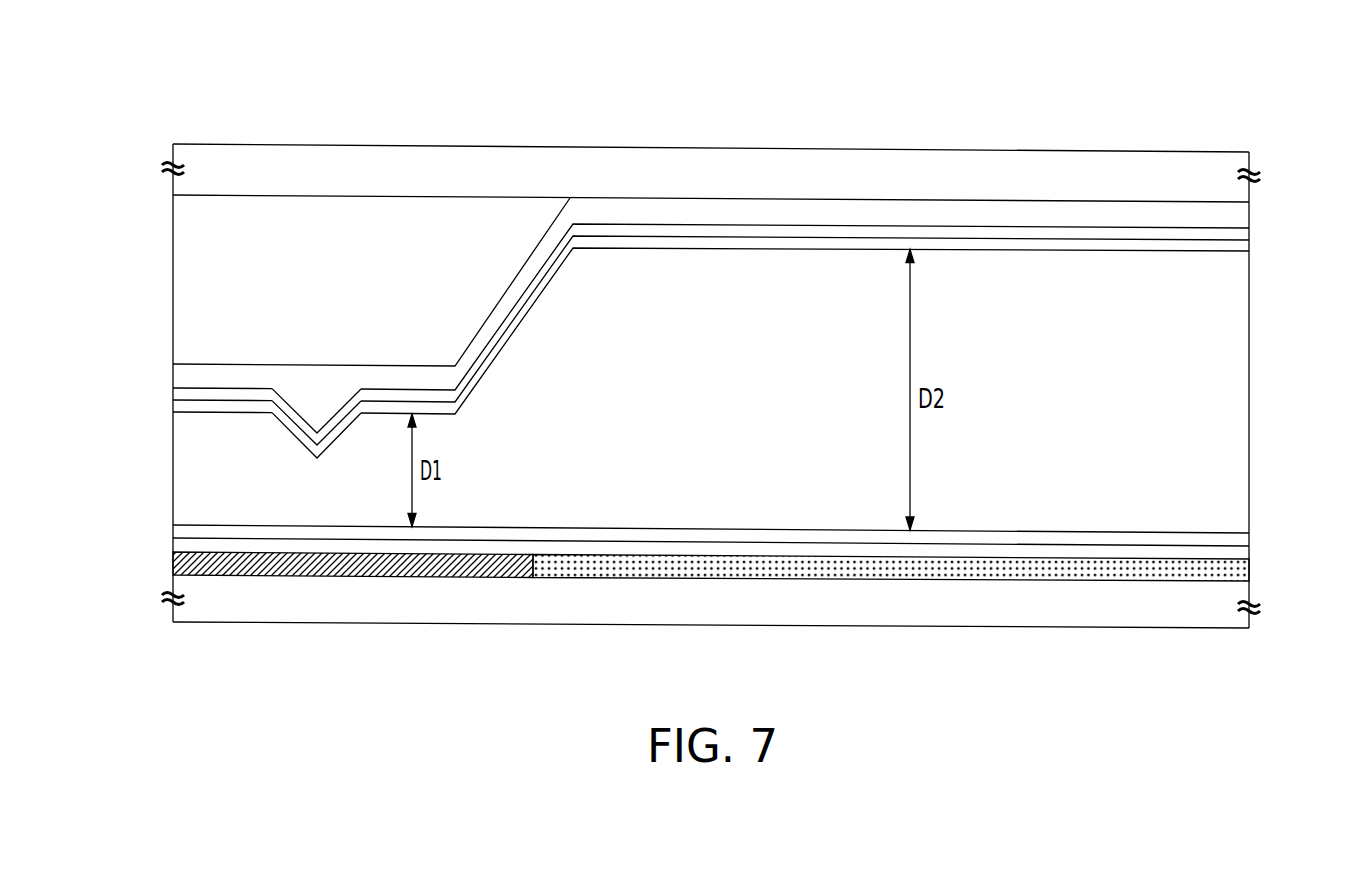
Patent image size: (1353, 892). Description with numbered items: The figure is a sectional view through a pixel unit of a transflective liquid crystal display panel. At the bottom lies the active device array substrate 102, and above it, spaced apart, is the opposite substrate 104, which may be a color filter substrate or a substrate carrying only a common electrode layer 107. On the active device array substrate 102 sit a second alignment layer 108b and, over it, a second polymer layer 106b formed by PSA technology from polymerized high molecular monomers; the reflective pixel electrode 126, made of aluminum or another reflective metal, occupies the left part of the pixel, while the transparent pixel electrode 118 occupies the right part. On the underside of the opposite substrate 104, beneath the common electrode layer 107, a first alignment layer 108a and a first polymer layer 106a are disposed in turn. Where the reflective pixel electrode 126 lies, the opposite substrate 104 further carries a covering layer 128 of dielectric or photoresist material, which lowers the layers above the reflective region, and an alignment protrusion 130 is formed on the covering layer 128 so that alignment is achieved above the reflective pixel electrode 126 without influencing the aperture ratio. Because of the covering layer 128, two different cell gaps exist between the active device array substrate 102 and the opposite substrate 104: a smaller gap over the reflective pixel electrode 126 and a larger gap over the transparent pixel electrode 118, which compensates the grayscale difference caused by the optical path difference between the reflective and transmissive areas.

The active device array substrate 102 is at (1215, 617).
The opposite substrate 104 is at (1212, 170).
The first polymer layer 106a is at (1243, 250).
The second polymer layer 106b is at (1243, 541).
The common electrode layer 107 is at (1242, 218).
The first alignment layer 108a is at (1243, 233).
The second alignment layer 108b is at (1243, 548).
The transparent pixel electrode 118 is at (1243, 571).
The reflective pixel electrode 126 is at (177, 565).
The covering layer 128 is at (195, 279).
The alignment protrusion 130 is at (308, 412).